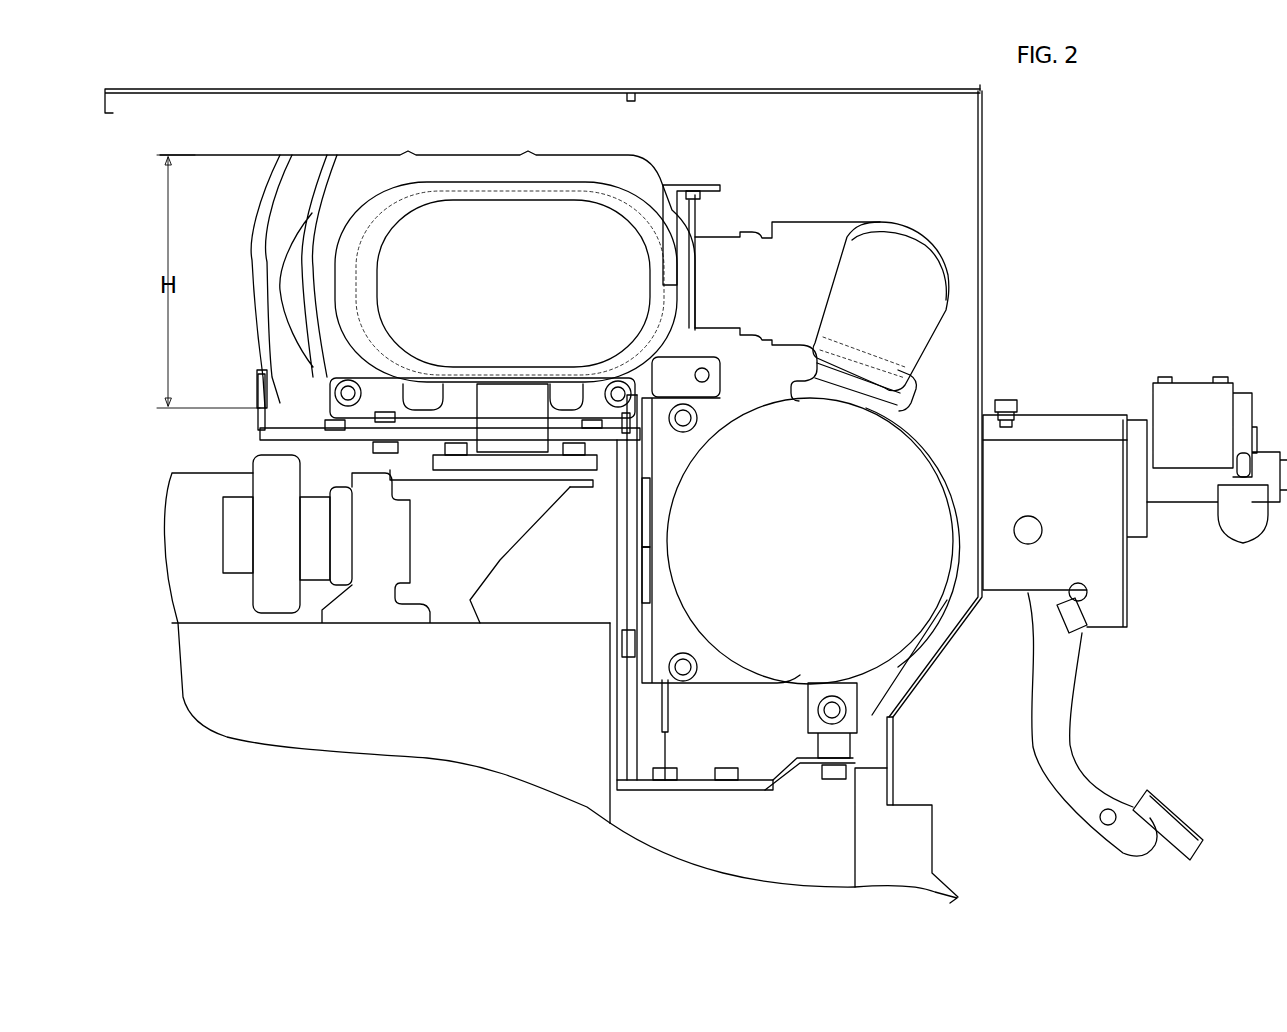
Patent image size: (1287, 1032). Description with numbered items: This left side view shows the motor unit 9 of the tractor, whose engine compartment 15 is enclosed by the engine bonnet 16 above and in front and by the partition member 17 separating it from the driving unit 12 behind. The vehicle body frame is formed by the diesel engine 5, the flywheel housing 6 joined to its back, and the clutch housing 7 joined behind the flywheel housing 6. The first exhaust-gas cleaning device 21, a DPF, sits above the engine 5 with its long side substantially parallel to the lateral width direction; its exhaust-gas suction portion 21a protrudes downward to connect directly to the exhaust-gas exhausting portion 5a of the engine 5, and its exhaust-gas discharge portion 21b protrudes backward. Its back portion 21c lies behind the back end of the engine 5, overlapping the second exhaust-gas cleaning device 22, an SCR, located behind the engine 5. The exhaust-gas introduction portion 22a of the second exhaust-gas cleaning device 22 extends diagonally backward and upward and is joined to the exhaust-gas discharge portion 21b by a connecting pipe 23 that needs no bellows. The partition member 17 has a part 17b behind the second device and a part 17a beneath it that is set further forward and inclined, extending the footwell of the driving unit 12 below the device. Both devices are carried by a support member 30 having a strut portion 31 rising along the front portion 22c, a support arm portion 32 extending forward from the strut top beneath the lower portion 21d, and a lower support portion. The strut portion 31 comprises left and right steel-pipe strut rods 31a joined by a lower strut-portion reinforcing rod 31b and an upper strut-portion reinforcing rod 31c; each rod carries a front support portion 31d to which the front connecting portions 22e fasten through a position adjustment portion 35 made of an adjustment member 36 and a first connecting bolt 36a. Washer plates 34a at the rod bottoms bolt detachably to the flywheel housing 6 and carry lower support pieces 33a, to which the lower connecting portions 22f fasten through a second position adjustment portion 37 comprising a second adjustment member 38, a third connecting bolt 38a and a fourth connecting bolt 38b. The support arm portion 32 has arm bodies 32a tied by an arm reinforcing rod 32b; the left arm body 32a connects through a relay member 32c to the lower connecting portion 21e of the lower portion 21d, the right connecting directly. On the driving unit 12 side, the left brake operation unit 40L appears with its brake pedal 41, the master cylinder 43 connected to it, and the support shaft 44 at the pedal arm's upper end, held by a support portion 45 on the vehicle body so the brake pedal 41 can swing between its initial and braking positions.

The motor unit 9 is at (152, 141).
The engine bonnet 16 is at (332, 95).
The engine compartment 15 is at (602, 145).
The partition member 17 is at (985, 265).
The part of partition member 17a is at (895, 760).
The part of partition member 17b is at (985, 478).
The driving unit 12 is at (1172, 338).
The first exhaust-gas cleaning device 21 is at (492, 155).
The exhaust-gas suction portion 21a is at (495, 470).
The exhaust-gas discharge portion 21b is at (722, 318).
The back portion 21c is at (705, 240).
The lower portion 21d is at (510, 385).
The lower connecting portion 21e is at (262, 385).
The second exhaust-gas cleaning device 22 is at (935, 650).
The exhaust-gas introduction portion 22a is at (900, 395).
The front portion 22c is at (643, 548).
The front connecting portions 22e is at (690, 470).
The lower connecting portions 22f is at (875, 690).
The connecting pipe 23 is at (850, 250).
The support member 30 is at (700, 187).
The strut portion 31 is at (627, 760).
The strut rods 31a is at (627, 710).
The lower strut-portion reinforcing rod 31b is at (667, 713).
The upper strut-portion reinforcing rod 31c is at (690, 190).
The front support portion 31d is at (640, 575).
The support arm portion 32 is at (262, 436).
The arm bodies 32a is at (258, 380).
The arm reinforcing rod 32b is at (260, 432).
The relay member 32c is at (355, 380).
The lower support pieces 33a is at (895, 790).
The washer plates 34a is at (650, 787).
The position adjustment portion 35 is at (675, 360).
The adjustment member 36 is at (645, 668).
The first connecting bolt 36a is at (615, 390).
The second position adjustment portion 37 is at (868, 718).
The second adjustment member 38 is at (812, 735).
The third connecting bolt 38a is at (832, 700).
The fourth connecting bolt 38b is at (835, 780).
The brake pedal 41 is at (1067, 740).
The left brake operation unit 40L is at (1141, 766).
The master cylinder 43 is at (1195, 385).
The support shaft 44 is at (1042, 530).
The support portion 45 is at (1055, 440).
The engine 5 is at (270, 748).
The exhaust-gas exhausting portion 5a is at (500, 560).
The flywheel housing 6 is at (700, 853).
The clutch housing 7 is at (935, 850).